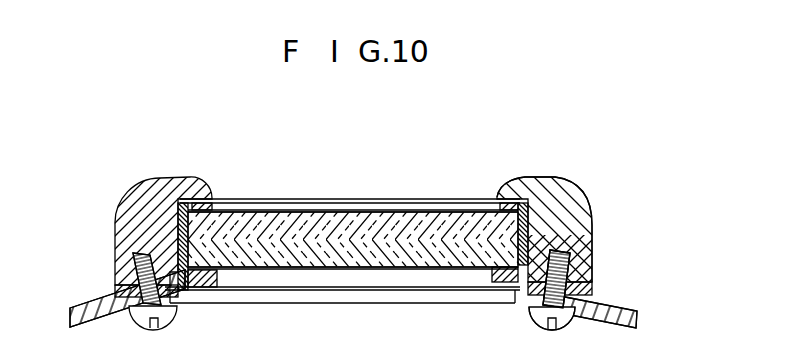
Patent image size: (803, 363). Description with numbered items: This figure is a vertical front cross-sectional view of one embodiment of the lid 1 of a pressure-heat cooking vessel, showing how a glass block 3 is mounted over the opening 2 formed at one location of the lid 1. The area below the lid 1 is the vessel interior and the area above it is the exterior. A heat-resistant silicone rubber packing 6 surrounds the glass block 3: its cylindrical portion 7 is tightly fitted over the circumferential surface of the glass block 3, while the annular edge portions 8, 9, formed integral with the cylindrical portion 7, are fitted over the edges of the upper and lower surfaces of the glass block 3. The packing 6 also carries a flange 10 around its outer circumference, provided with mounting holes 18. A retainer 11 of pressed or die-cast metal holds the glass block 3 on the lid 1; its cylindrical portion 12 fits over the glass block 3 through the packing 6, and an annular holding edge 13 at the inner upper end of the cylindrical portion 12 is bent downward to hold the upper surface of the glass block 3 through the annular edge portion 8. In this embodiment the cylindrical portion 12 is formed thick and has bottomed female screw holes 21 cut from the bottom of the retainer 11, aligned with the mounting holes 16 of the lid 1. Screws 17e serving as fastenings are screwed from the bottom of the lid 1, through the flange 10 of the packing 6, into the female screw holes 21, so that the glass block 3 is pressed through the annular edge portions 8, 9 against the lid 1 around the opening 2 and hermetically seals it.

The lid 1 is at (624, 310).
The opening 2 is at (485, 292).
The glass block 3 is at (384, 222).
The packing 6 is at (541, 200).
The cylindrical portion 7 is at (525, 230).
The annular edge portion 8 is at (207, 198).
The annular edge portion 9 is at (213, 273).
The flange 10 is at (592, 292).
The retainer 11 is at (158, 178).
The cylindrical portion 12 is at (573, 198).
The annular holding edge 13 is at (517, 178).
The mounting hole 16 is at (130, 310).
The screw 17e is at (540, 317).
The mounting hole 18 is at (115, 290).
The female screw hole 21 is at (573, 263).